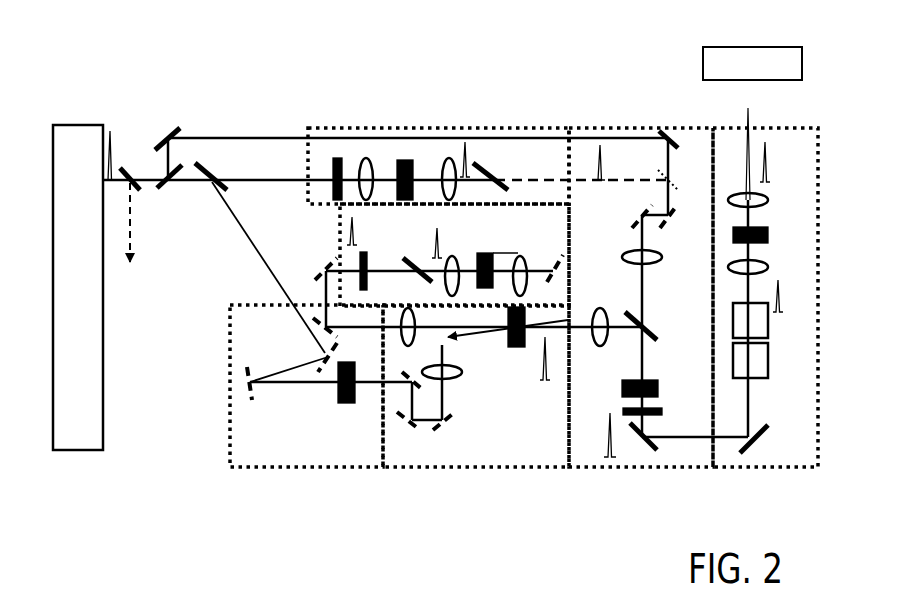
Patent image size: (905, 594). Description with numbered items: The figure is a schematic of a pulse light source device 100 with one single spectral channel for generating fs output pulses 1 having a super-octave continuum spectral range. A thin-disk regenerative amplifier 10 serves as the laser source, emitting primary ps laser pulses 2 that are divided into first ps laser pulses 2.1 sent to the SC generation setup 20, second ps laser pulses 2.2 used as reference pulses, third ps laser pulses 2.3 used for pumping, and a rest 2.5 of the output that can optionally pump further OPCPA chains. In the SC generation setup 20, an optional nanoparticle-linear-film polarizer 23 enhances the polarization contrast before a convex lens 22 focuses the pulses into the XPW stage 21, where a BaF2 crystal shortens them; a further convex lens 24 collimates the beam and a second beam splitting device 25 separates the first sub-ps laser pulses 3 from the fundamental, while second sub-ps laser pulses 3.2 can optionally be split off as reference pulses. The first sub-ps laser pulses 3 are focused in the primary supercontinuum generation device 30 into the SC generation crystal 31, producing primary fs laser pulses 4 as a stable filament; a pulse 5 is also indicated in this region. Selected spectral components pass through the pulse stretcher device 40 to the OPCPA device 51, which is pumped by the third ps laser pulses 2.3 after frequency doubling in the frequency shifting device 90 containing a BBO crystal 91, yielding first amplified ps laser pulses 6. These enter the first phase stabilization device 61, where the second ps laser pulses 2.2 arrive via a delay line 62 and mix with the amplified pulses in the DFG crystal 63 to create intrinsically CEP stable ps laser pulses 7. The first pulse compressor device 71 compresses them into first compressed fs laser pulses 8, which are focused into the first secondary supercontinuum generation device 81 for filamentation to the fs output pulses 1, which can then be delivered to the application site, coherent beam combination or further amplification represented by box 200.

The pulse light source device 100 is at (170, 65).
The application/beam combination/amplification box 200 is at (793, 77).
The thin-disk regenerative amplifier 10 is at (78, 287).
The primary ps laser pulses 2 is at (115, 153).
The first ps laser pulses 2.1 is at (141, 175).
The second ps laser pulses 2.2 is at (411, 154).
The third ps laser pulses 2.3 is at (260, 258).
The rest of the laser output 2.5 is at (146, 233).
The SC generation setup 20 is at (561, 174).
The cross-polarized wave generation (XPW) stage 21 is at (407, 162).
The convex lens 22 is at (363, 162).
The nanoparticle-linear-film polarizer 23 is at (335, 170).
The convex lens 24 is at (446, 162).
The second beam splitting device 25 is at (490, 168).
The first sub-ps laser pulses 3 is at (470, 159).
The second sub-ps laser pulses 3.2 is at (612, 162).
The pulse stretcher device 40 is at (416, 240).
The primary fs laser pulses 4 is at (442, 243).
The pulse 5 is at (357, 231).
The primary supercontinuum generation device 30 is at (502, 264).
The SC generation crystal 31 is at (478, 256).
The OPCPA device 51 is at (560, 460).
The first amplified ps laser pulses 6 is at (508, 343).
The frequency shifting device 90 is at (372, 460).
The BBO crystal 91 is at (335, 397).
The first phase stabilization device 61 is at (701, 314).
The delay line 62 is at (666, 221).
The DFG crystal 63 is at (655, 395).
The first CEP stable ps laser pulses 7 is at (614, 435).
The fs output pulses 1 is at (770, 162).
The first secondary supercontinuum generation device 81 is at (765, 235).
The first compressed fs laser pulses 8 is at (766, 309).
The first pulse compressor device 71 is at (766, 360).